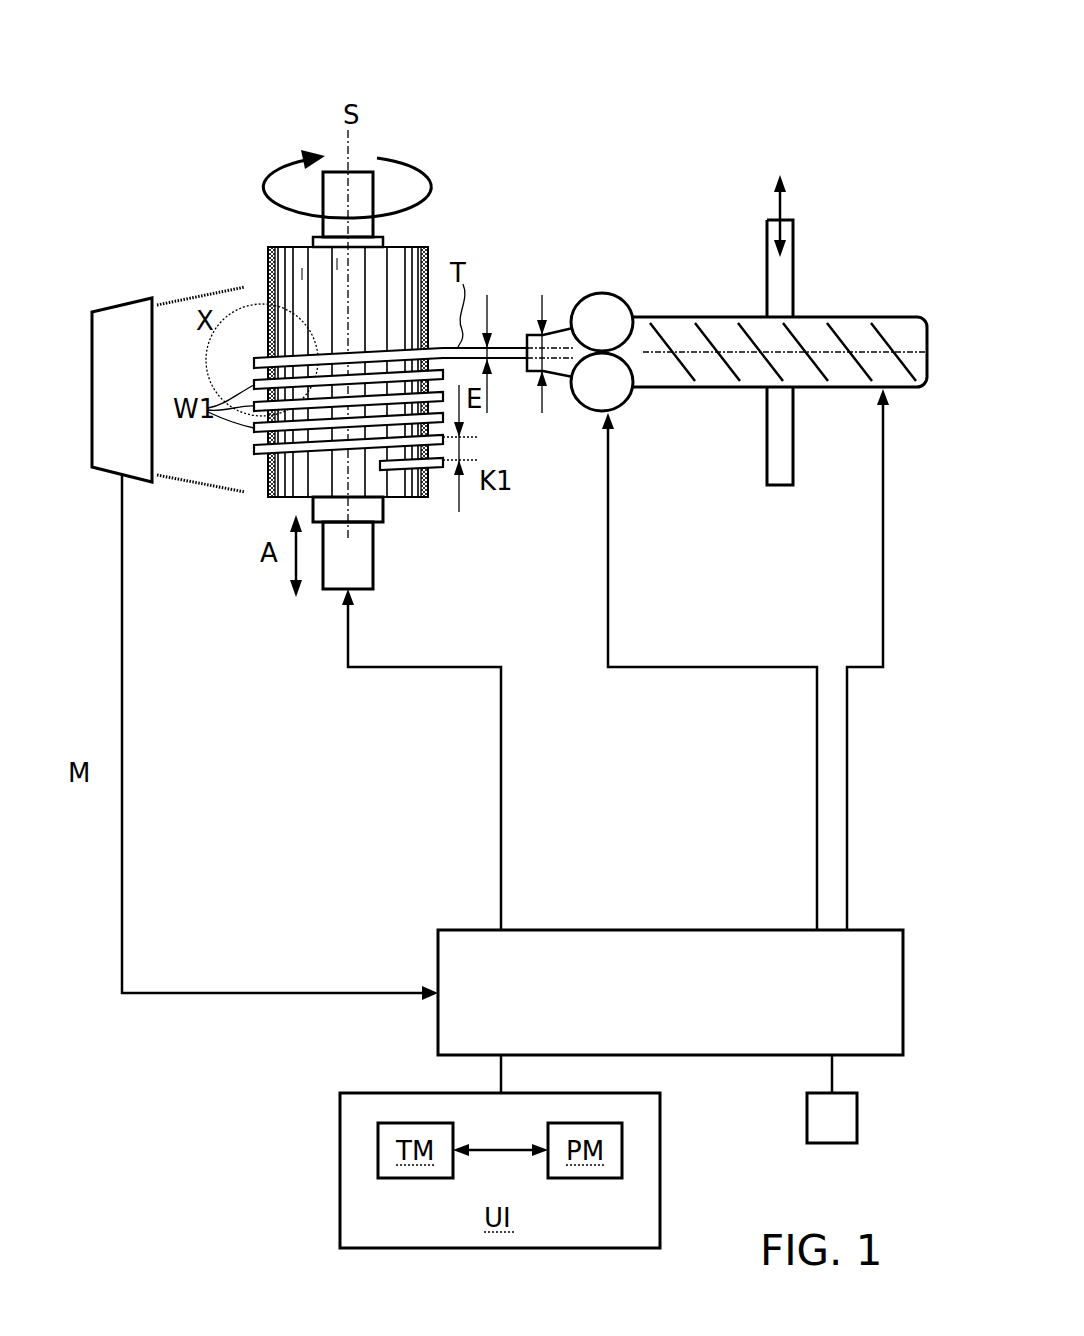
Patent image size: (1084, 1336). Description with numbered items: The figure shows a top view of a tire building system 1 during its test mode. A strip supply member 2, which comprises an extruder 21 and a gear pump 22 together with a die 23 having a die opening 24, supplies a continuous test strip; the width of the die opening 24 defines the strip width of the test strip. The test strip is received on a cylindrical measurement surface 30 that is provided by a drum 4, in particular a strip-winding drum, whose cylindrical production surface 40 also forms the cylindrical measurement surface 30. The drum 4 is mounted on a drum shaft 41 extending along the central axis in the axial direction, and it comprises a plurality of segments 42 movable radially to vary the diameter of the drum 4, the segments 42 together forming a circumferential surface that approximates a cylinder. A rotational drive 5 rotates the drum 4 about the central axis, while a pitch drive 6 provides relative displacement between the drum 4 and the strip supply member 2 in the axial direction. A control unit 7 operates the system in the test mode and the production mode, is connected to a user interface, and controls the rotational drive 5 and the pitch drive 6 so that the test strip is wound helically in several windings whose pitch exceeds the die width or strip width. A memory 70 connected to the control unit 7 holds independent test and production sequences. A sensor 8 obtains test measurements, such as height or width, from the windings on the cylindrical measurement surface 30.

The tire building system 1 is at (135, 85).
The strip supply member 2 is at (780, 303).
The drum 4 is at (373, 334).
The rotational drive 5 is at (373, 512).
The pitch drive 6 is at (367, 183).
The control unit 7 is at (680, 1001).
The sensor 8 is at (129, 397).
The extruder 21 is at (847, 325).
The gear pump 22 is at (603, 309).
The die 23 is at (557, 369).
The die opening 24 is at (522, 347).
The cylindrical measurement surface 30 is at (407, 359).
The cylindrical production surface 40 is at (428, 267).
The drum shaft 41 is at (386, 240).
The segments 42 is at (337, 261).
The memory 70 is at (849, 1133).